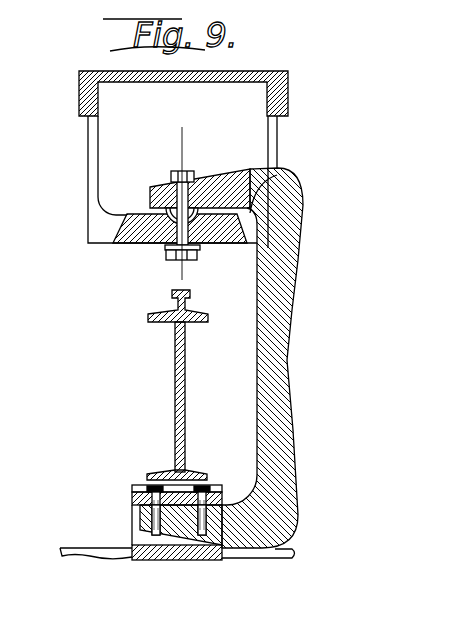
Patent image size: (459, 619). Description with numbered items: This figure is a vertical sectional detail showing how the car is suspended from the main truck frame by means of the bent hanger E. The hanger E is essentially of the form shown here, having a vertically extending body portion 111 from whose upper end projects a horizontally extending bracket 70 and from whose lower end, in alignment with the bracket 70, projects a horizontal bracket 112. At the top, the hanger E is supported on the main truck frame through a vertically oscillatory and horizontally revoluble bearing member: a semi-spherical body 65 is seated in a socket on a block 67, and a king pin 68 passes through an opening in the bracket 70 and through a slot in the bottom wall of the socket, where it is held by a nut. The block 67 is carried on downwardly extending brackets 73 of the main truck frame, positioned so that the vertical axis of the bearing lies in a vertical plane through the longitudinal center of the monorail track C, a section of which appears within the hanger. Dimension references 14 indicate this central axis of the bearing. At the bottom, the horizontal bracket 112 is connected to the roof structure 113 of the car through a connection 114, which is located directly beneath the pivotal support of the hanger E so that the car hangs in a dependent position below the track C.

The downwardly extending brackets 73 is at (88, 143).
The center line of bolt 14 is at (190, 146).
The king pin 68 is at (173, 178).
The bracket 70 is at (153, 189).
The semi-spherical body 65 is at (170, 209).
The block 67 is at (142, 243).
The bent hanger E is at (308, 233).
The vertically extending body portion 111 is at (284, 321).
The monorail track C is at (163, 305).
The connection 114 is at (132, 498).
The horizontal bracket 112 is at (182, 528).
The roof structure 113 is at (108, 548).